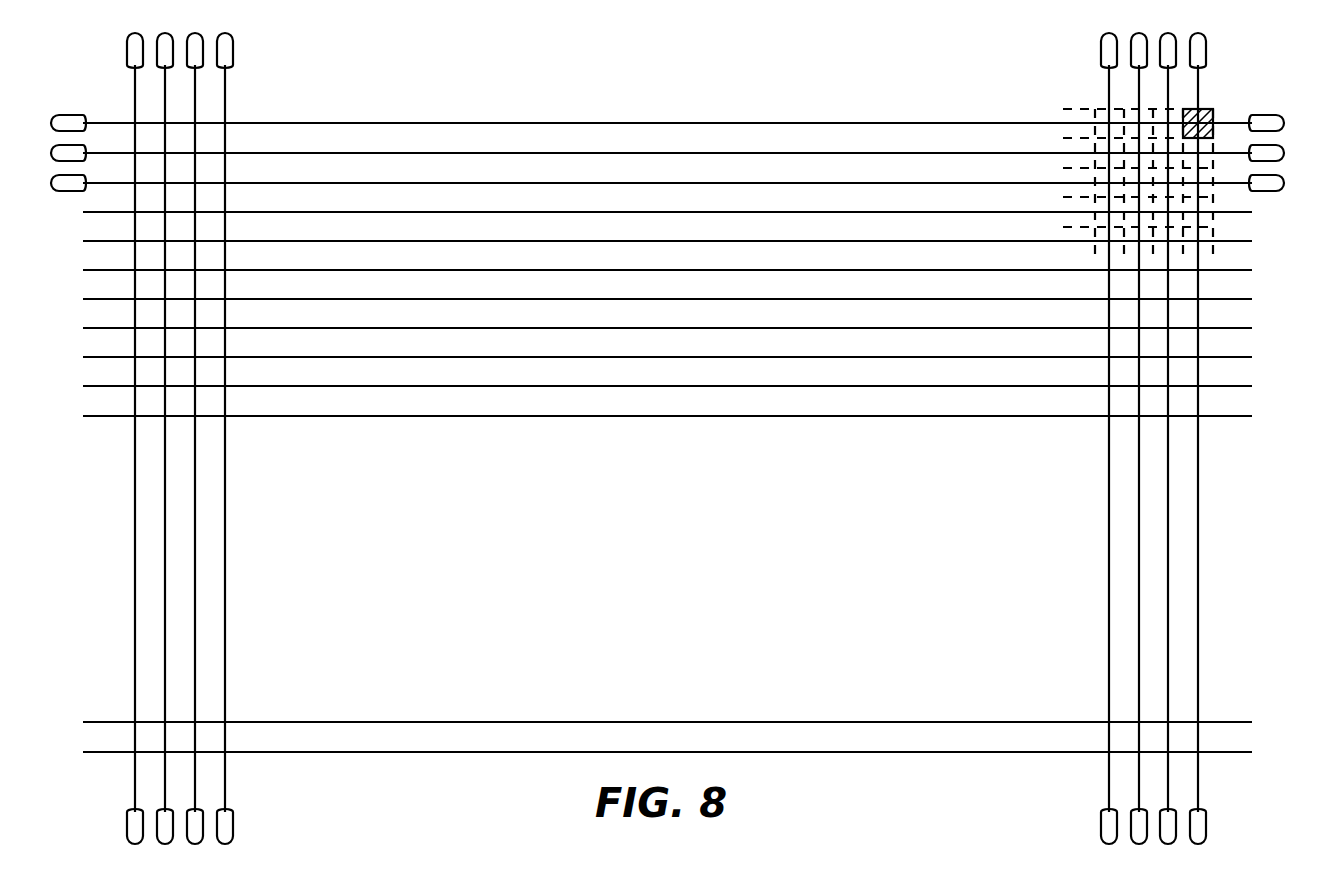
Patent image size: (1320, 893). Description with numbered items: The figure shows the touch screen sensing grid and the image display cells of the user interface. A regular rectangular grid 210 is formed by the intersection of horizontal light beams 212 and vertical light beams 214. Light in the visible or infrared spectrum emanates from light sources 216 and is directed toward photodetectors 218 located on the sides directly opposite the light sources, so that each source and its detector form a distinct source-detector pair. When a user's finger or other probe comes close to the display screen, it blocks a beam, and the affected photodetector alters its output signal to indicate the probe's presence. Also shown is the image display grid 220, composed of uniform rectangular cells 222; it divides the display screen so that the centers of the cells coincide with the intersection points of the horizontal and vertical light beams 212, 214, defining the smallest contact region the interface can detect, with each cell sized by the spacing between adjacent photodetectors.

The regular rectangular grid 210 is at (236, 113).
The horizontal light beams 212 is at (458, 183).
The vertical light beams 214 is at (135, 513).
The light sources 216 is at (74, 117).
The photodetectors 218 is at (1100, 42).
The image display grid 220 is at (1086, 105).
The uniform rectangular cells 222 is at (1213, 108).